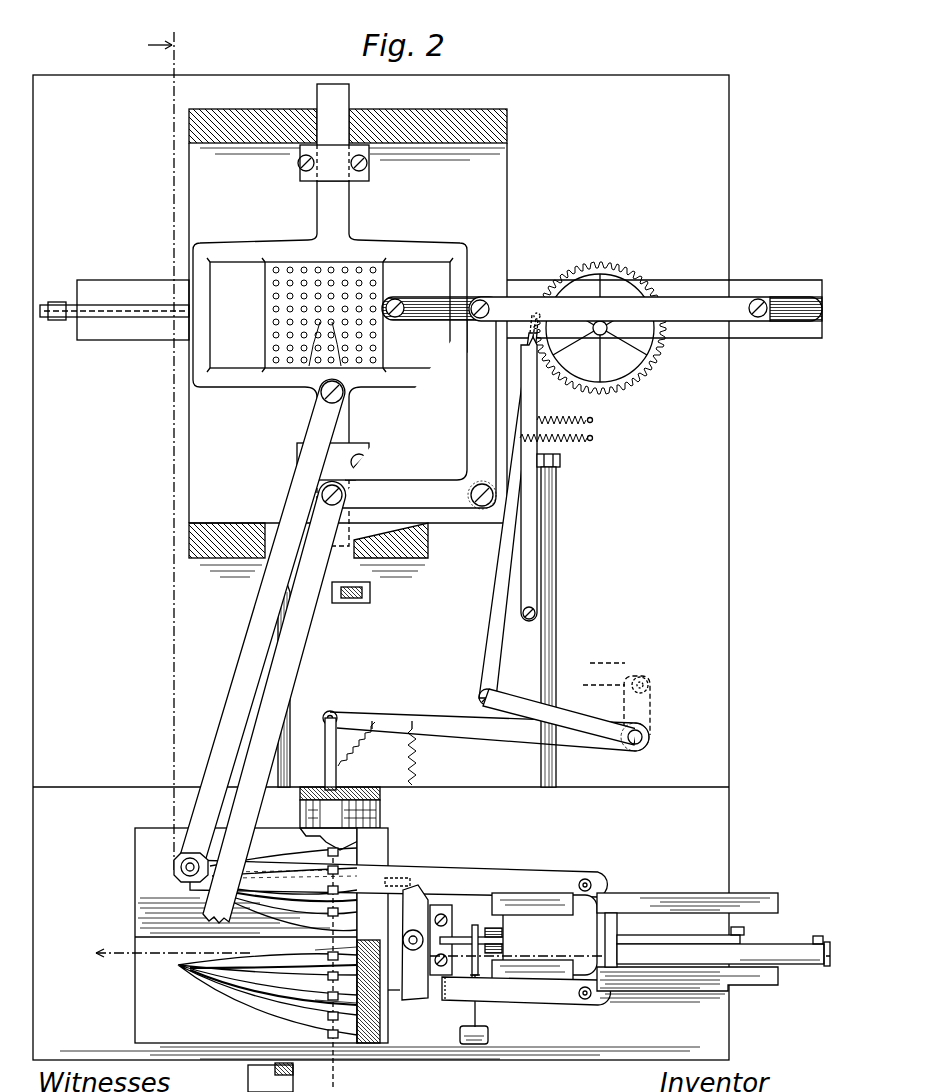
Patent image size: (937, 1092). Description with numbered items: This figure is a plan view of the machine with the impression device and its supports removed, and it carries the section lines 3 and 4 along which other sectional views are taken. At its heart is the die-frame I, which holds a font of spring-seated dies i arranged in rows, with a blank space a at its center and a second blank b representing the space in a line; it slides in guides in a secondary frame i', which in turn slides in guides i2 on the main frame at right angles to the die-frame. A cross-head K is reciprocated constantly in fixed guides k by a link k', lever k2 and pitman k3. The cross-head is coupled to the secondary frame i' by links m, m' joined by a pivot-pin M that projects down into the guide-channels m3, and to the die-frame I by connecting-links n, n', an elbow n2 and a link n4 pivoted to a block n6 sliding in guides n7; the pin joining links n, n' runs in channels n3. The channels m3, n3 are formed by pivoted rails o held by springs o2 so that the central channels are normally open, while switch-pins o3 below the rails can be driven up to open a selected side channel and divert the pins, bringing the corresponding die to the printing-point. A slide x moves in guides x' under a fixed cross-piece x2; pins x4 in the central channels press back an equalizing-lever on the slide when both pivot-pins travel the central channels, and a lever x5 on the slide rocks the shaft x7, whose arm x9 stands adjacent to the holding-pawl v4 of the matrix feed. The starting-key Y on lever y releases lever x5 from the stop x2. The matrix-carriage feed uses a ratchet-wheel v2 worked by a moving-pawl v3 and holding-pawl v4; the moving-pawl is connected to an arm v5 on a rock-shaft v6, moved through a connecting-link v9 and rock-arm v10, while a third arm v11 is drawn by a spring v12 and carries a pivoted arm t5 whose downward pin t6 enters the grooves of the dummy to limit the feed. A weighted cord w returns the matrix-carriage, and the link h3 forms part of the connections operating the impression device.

The section line 3 3 is at (164, 441).
The section line 4 4 is at (164, 952).
The weighted cord w is at (114, 308).
The die-frame I is at (330, 315).
The perforations i is at (337, 315).
The secondary frame i' is at (330, 315).
The guides i2 is at (370, 172).
The elbow n2 is at (414, 414).
The guide-channels n3 is at (262, 1022).
The link n4 is at (645, 308).
The block n6 is at (762, 298).
The guides n7 is at (806, 324).
The ratchet-wheel v2 is at (600, 333).
The moving-pawl v3 is at (520, 378).
The holding-pawl v4 is at (538, 412).
The third arm x9 is at (562, 460).
The rock-shaft x7 is at (557, 608).
The connecting-link v9 is at (622, 678).
The rock-arm v10 is at (652, 711).
The third arm v11 is at (492, 740).
The arm v5 is at (574, 710).
The rock-shaft v6 is at (651, 738).
The spring v12 is at (415, 762).
The pivoted arm t5 is at (337, 760).
The downward-projecting pin t6 is at (340, 778).
The guide-channels m3 is at (283, 830).
The lever x5 is at (402, 918).
The link m is at (398, 878).
The rails o is at (345, 863).
The springs o2 is at (315, 1000).
The switch-pins o3 is at (335, 1043).
The link m' is at (261, 629).
The connecting-link n' is at (274, 702).
The blank space a is at (339, 386).
The blank b is at (322, 438).
The pivot-pin M is at (176, 867).
The link h3 is at (357, 603).
The pins x4 is at (398, 876).
The fixed cross-piece x2 is at (427, 942).
The slide x is at (472, 931).
The guides x' is at (467, 950).
The starting-lever y is at (472, 1012).
The starting-key Y is at (488, 1036).
The cross-head K is at (630, 936).
The connecting-link n is at (526, 991).
The fixed guides k is at (687, 952).
The link k' is at (680, 916).
The lever k2 is at (778, 948).
The pitman k3 is at (805, 963).